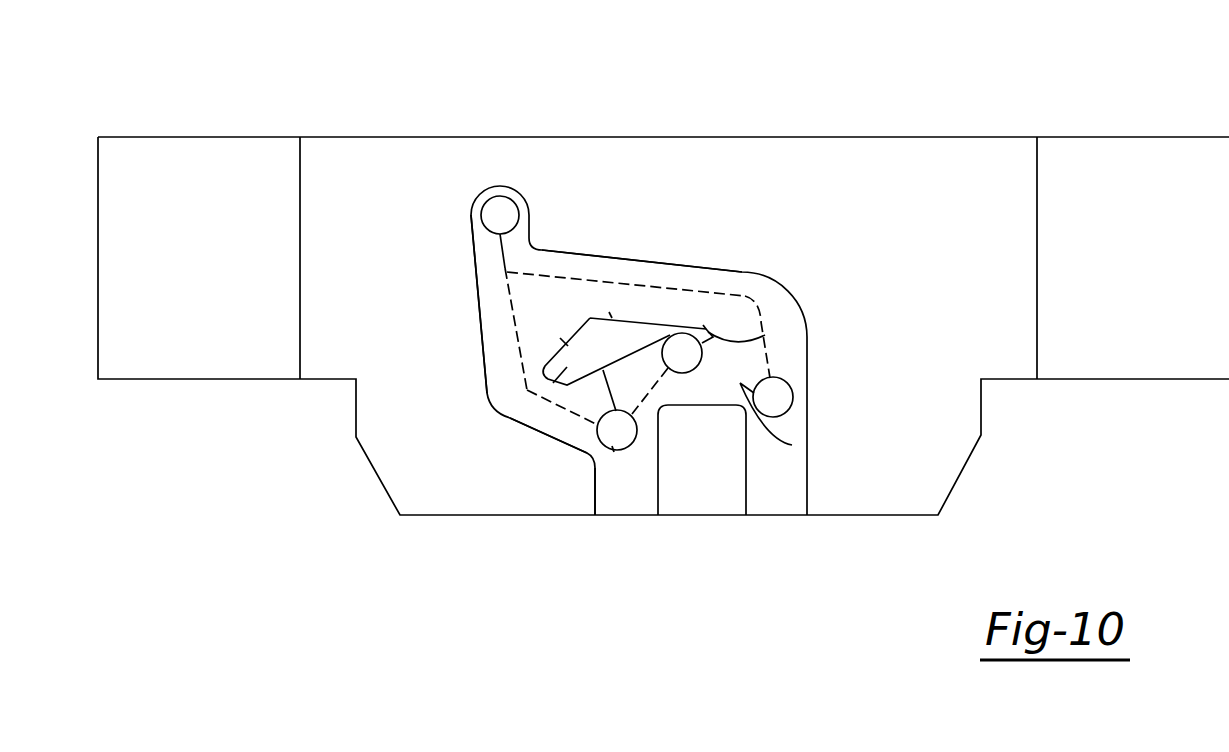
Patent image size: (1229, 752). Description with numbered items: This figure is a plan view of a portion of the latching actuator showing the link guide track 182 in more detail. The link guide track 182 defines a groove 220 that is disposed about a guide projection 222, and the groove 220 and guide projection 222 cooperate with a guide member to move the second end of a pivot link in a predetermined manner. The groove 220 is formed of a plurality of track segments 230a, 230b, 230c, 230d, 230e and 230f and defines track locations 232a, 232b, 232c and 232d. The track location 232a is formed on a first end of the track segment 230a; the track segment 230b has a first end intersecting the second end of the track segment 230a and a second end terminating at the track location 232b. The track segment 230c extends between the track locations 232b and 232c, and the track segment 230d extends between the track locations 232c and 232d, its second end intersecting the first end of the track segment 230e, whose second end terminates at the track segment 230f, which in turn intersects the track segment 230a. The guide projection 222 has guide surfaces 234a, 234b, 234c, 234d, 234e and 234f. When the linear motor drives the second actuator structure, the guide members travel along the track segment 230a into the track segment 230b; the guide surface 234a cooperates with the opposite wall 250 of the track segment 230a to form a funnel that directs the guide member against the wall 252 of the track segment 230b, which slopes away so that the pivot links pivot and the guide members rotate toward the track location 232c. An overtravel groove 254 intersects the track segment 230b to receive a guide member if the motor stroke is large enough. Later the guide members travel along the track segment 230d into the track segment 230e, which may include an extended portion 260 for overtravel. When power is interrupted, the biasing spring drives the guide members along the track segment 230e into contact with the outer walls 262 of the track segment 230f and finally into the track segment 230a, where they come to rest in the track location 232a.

The link guide track 182 is at (1163, 345).
The groove 220 is at (563, 302).
The guide projection 222 is at (630, 327).
The track segment 230a is at (510, 311).
The track segment 230b is at (565, 415).
The track segment 230c is at (647, 397).
The track segment 230d is at (792, 445).
The track segment 230e is at (758, 323).
The track segment 230f is at (622, 285).
The track location 232a is at (480, 204).
The track location 232b is at (633, 443).
The track location 232c is at (697, 370).
The track location 232d is at (793, 392).
The guide surface 234a is at (565, 343).
The guide surface 234b is at (567, 367).
The guide surface 234c is at (612, 446).
The guide surface 234d is at (703, 325).
The guide surface 234e is at (765, 335).
The guide surface 234f is at (612, 317).
The opposite wall 250 is at (471, 258).
The wall 252 is at (570, 450).
The overtravel groove 254 is at (637, 497).
The extended portion 260 is at (780, 500).
The outer walls 262 is at (570, 250).